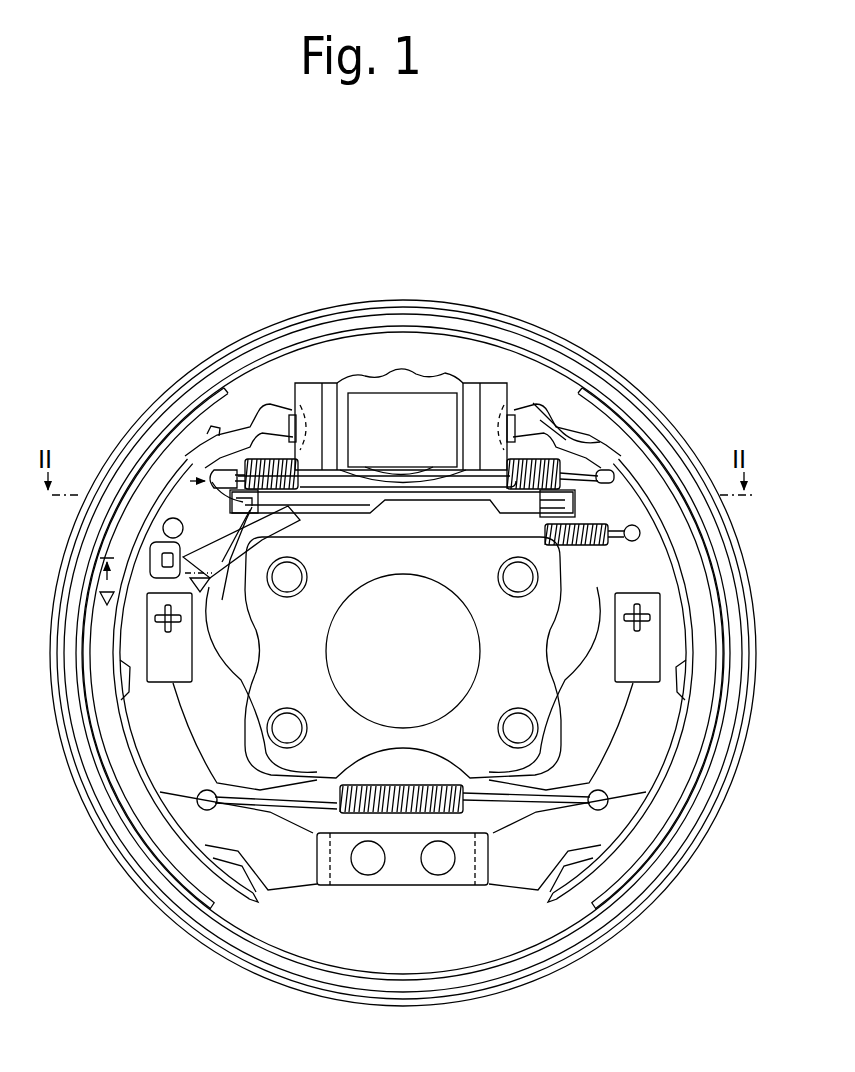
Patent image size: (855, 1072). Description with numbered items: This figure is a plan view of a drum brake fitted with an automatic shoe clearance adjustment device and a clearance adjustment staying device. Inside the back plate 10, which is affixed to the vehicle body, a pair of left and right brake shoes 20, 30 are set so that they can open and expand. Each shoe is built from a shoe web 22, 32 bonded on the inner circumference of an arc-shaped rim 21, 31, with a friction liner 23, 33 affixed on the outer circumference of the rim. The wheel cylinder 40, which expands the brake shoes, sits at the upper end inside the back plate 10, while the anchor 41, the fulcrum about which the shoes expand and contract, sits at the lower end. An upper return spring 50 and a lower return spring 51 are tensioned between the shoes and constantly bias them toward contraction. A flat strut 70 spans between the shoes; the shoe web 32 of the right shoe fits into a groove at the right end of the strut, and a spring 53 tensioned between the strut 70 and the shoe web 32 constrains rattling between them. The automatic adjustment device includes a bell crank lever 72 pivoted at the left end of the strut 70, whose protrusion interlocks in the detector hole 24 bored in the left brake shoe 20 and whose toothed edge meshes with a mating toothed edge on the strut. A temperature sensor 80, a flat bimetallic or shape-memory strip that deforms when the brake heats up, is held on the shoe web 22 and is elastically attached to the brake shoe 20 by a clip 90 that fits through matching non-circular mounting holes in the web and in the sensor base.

The back plate 10 is at (546, 327).
The brake shoe 20 is at (180, 848).
The rim 21 is at (117, 648).
The shoe web 22 is at (150, 745).
The friction liner 23 is at (113, 712).
The detector hole 24 is at (250, 512).
The brake shoe 30 is at (646, 828).
The rim 31 is at (650, 797).
The shoe web 32 is at (648, 758).
The friction liner 33 is at (683, 727).
The wheel cylinder 40 is at (398, 420).
The anchor 41 is at (385, 880).
The upper return spring 50 is at (573, 443).
The lower return spring 51 is at (455, 808).
The spring 53 is at (600, 541).
The strut 70 is at (404, 518).
The bell crank lever 72 is at (198, 518).
The temperature sensor 80 is at (202, 543).
The clip 90 is at (152, 533).